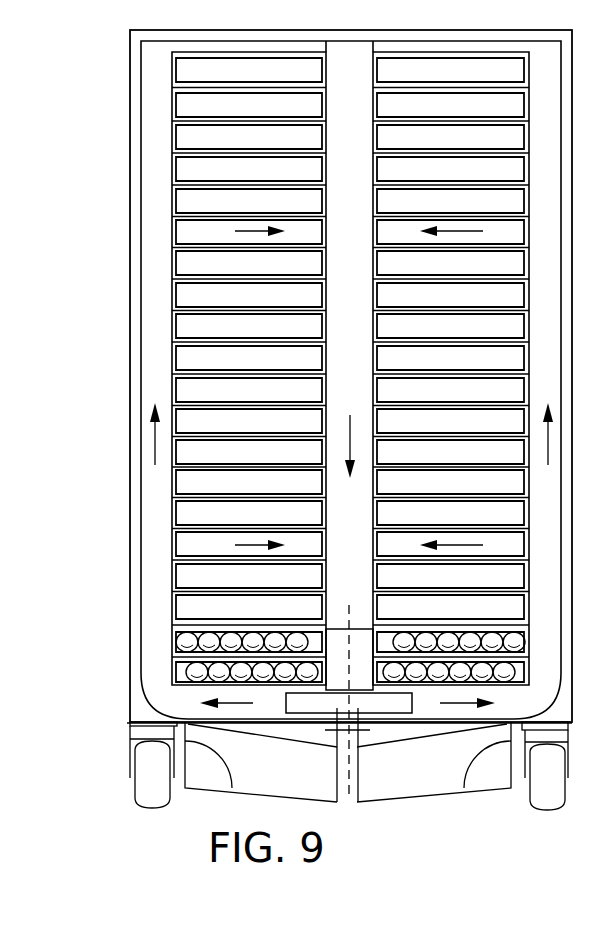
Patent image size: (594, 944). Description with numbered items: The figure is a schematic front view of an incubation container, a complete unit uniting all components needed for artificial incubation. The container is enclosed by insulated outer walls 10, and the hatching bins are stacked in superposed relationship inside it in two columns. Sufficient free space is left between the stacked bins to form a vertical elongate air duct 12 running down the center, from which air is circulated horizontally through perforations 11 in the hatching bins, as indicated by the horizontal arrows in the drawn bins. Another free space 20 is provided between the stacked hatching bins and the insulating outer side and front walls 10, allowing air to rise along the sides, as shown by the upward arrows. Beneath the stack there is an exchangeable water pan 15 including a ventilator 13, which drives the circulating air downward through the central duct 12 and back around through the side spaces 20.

The insulated outer walls 10 is at (136, 297).
The free space 20 is at (153, 497).
The perforations 11 is at (185, 573).
The vertical elongate air duct 12 is at (350, 375).
The ventilator 13 is at (315, 703).
The exchangeable water pan 15 is at (417, 777).